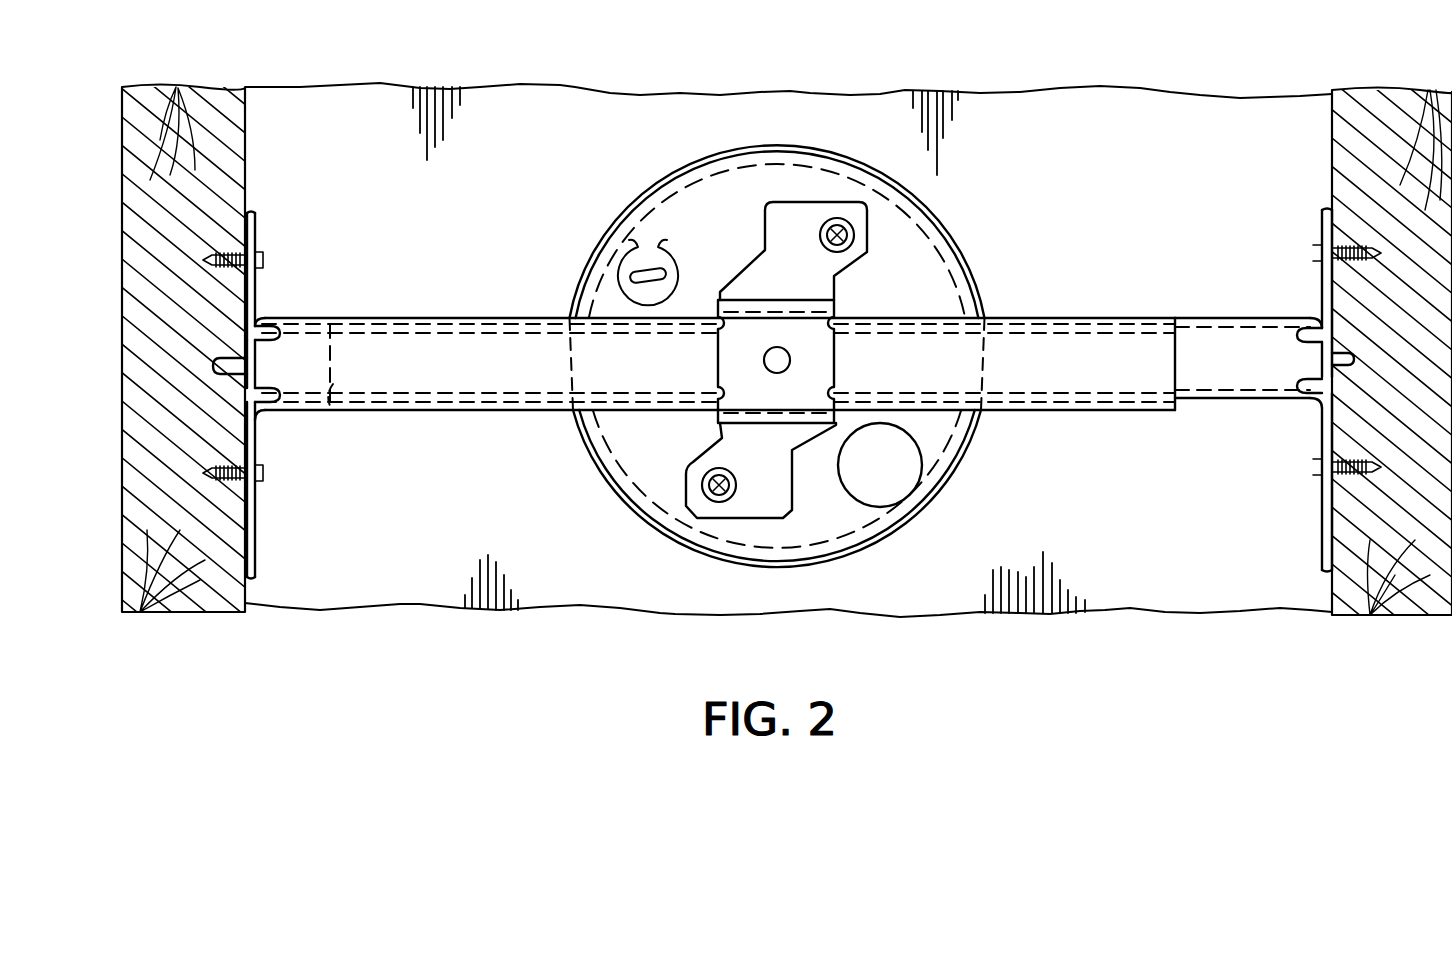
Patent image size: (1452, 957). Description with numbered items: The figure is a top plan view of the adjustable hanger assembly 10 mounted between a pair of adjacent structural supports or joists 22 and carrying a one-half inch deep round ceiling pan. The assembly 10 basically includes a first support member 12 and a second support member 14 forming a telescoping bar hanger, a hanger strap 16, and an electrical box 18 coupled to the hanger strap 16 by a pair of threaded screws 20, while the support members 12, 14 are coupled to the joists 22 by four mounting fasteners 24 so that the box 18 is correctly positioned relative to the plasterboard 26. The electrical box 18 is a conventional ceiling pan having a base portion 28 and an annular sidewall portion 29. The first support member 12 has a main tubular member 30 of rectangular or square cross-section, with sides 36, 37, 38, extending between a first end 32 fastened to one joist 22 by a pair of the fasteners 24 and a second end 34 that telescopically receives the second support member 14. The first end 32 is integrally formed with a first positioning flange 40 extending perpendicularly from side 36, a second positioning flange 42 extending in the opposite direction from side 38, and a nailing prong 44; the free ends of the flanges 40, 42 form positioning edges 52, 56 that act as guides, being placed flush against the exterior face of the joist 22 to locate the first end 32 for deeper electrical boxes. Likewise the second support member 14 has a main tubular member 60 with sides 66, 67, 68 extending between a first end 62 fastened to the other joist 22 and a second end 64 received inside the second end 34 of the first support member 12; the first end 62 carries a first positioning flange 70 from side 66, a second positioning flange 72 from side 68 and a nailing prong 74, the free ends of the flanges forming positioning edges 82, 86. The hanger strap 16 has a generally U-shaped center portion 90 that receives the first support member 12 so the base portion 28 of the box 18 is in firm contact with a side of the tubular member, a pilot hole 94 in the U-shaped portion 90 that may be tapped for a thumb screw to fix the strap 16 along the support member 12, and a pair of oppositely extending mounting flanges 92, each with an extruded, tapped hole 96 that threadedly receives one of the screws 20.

The adjustable hanger assembly 10 is at (1100, 240).
The first support member 12 is at (722, 369).
The second support member 14 is at (1231, 363).
The hanger strap 16 is at (751, 310).
The electrical box 18 is at (810, 356).
The screws 20 is at (826, 233).
The structural supports 22 is at (248, 100).
The mounting fasteners 24 is at (266, 264).
The plasterboard 26 is at (1165, 613).
The base portion 28 is at (936, 498).
The annular sidewall portion 29 is at (963, 436).
The main tubular member 30 is at (481, 411).
The first end 32 is at (295, 365).
The second end 34 is at (1183, 410).
The side 36 is at (420, 317).
The side 37 is at (505, 381).
The side 38 is at (538, 405).
The first positioning flange 40 is at (258, 232).
The second positioning flange 42 is at (258, 527).
The nailing prong 44 is at (258, 368).
The positioning edge 52 is at (251, 213).
The positioning edge 56 is at (255, 577).
The main tubular member 60 is at (416, 402).
The first end 62 is at (1295, 365).
The second end 64 is at (334, 412).
The side 66 is at (1200, 317).
The side 67 is at (1218, 376).
The side 68 is at (1228, 400).
The first positioning flange 70 is at (1321, 232).
The second positioning flange 72 is at (1321, 524).
The nailing prong 74 is at (1300, 334).
The positioning edge 82 is at (1326, 210).
The positioning edge 86 is at (1327, 571).
The U-shaped center portion 90 is at (834, 368).
The mounting flanges 92 is at (762, 212).
The pilot hole 94 is at (768, 360).
The extruded hole 96 is at (852, 243).